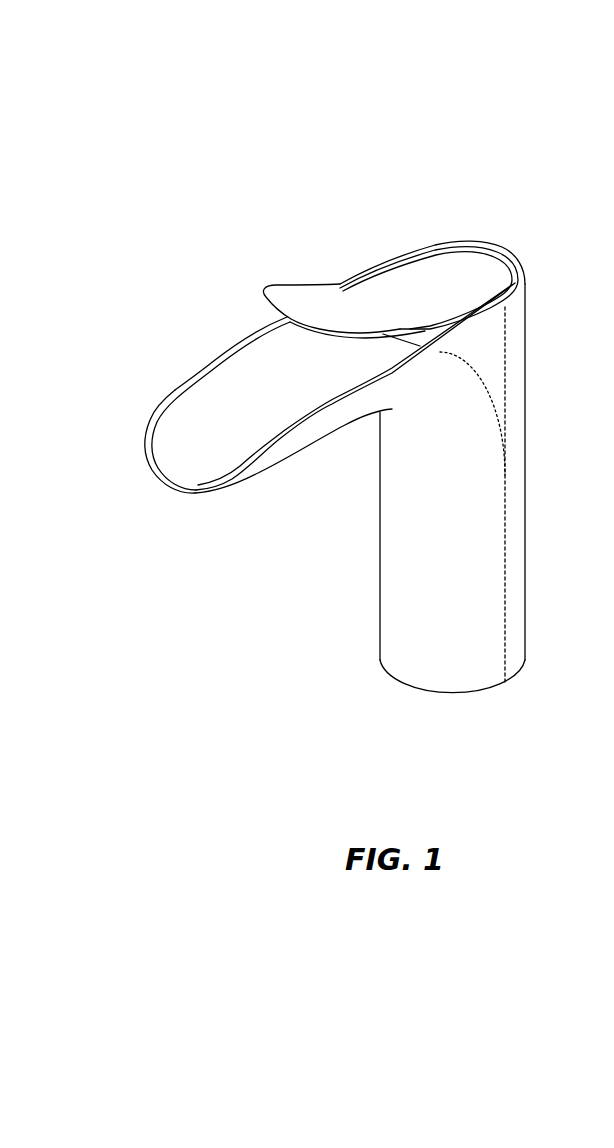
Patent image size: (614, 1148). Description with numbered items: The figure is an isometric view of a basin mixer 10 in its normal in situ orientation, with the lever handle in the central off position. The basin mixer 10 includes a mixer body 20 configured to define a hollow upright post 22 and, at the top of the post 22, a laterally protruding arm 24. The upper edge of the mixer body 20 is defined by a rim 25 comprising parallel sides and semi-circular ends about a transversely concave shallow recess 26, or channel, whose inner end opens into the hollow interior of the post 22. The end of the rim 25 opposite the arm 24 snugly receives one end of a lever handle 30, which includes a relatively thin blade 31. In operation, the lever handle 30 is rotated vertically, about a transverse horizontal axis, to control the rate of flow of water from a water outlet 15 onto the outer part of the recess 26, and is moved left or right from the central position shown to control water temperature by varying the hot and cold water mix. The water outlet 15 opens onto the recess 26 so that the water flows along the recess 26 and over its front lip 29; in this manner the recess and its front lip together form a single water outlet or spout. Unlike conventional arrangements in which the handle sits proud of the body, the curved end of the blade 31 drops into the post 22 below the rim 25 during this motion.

The basin mixer 10 is at (290, 155).
The water outlet 15 is at (436, 338).
The mixer body 20 is at (536, 398).
The hollow upright post 22 is at (381, 559).
The laterally protruding arm 24 is at (201, 505).
The rim 25 is at (231, 346).
The recess 26 is at (222, 418).
The front lip 29 is at (162, 487).
The lever handle 30 is at (463, 260).
The blade 31 is at (304, 309).